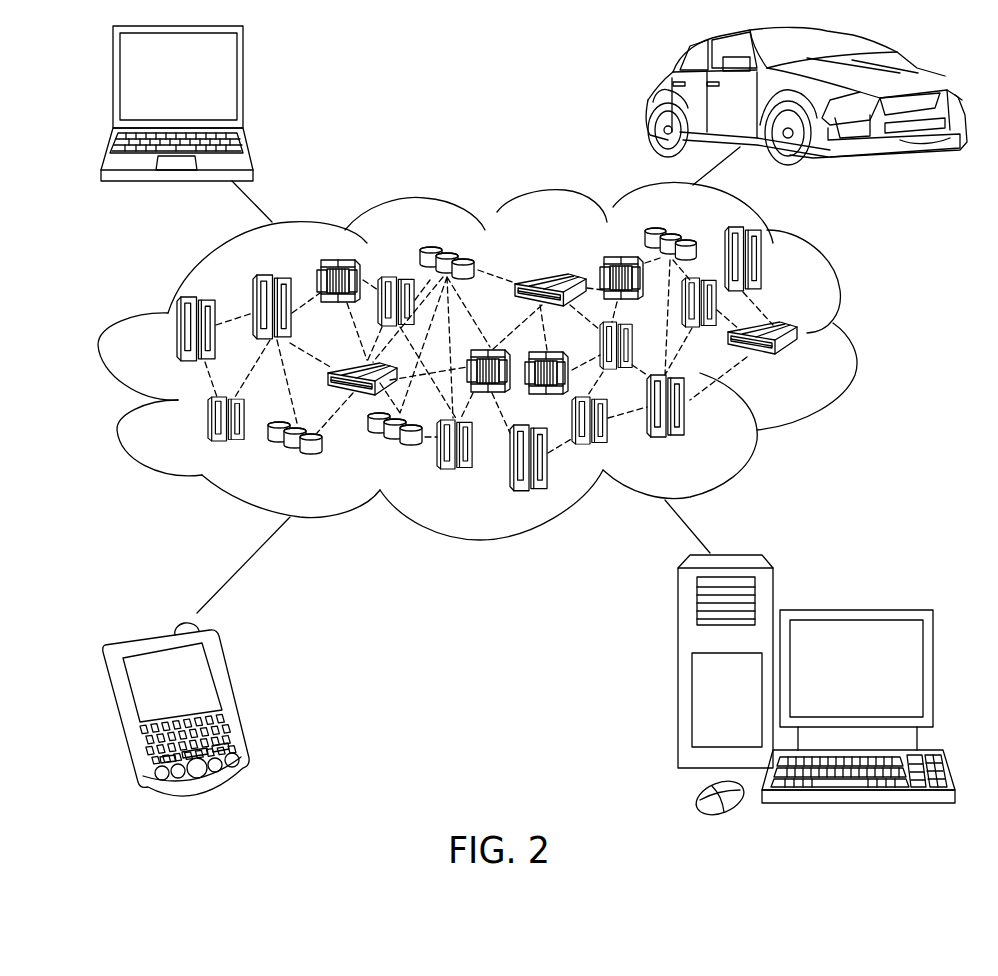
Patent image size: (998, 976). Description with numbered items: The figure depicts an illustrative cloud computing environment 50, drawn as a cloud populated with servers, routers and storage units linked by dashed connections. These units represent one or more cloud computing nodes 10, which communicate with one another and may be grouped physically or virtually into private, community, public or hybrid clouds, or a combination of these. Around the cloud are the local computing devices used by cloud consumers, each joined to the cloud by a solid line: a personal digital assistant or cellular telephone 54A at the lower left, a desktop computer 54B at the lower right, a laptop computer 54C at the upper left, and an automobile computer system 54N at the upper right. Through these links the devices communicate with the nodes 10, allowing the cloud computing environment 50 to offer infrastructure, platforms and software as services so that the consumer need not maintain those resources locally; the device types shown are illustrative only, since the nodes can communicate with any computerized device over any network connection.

The cloud computing node 10 is at (808, 371).
The cloud computing environment 50 is at (852, 338).
The personal digital assistant or cellular telephone 54A is at (232, 697).
The desktop computer 54B is at (855, 610).
The laptop computer 54C is at (243, 82).
The automobile computer system 54N is at (650, 100).